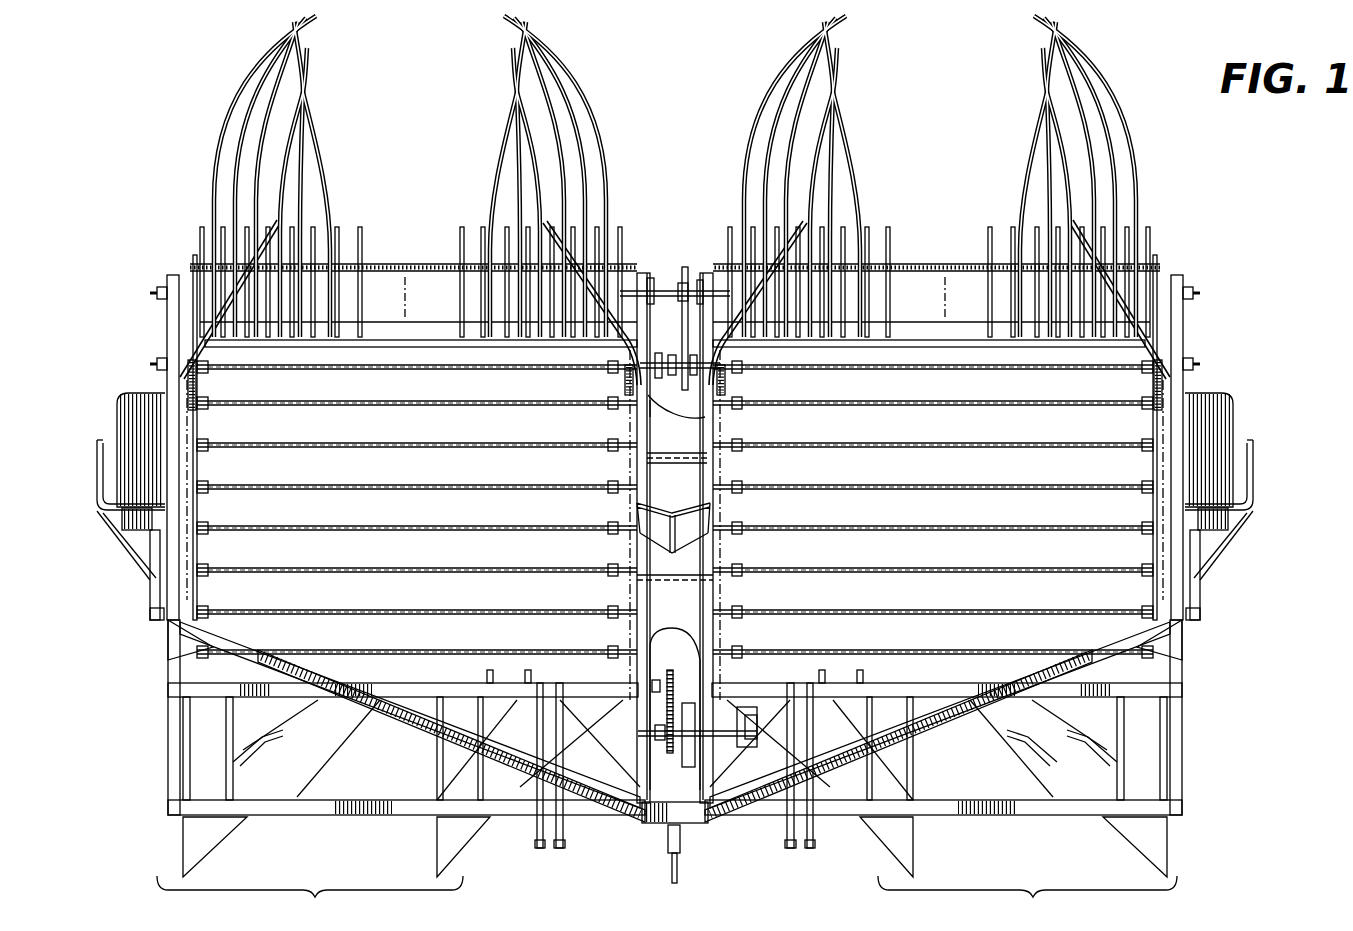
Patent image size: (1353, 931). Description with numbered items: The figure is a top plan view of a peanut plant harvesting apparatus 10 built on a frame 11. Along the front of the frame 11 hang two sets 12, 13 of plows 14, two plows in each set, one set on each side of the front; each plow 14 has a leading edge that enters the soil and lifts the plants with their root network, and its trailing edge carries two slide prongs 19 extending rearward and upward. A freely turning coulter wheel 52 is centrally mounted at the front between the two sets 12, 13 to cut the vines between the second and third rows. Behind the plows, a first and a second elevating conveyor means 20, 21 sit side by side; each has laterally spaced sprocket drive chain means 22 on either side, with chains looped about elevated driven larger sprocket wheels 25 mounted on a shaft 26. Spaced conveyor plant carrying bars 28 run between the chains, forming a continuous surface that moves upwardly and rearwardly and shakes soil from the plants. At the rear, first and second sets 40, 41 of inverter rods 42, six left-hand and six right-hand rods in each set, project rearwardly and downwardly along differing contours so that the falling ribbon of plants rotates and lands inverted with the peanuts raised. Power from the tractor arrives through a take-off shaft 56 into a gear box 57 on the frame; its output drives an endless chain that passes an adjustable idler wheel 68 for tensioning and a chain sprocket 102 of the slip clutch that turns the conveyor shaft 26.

The peanut plant harvesting apparatus 10 is at (695, 466).
The frame 11 is at (1183, 710).
The first set of plows 12 is at (310, 896).
The second set of plows 13 is at (1027, 896).
The plow 14 is at (210, 843).
The slide prong 19 is at (246, 748).
The first elevating conveyor means 20 is at (190, 590).
The second elevating conveyor means 21 is at (1152, 429).
The sprocket drive chain means 22 is at (192, 470).
The larger sprocket wheel 25 is at (202, 373).
The shaft 26 is at (652, 402).
The conveyor plant carrying bar 28 is at (510, 444).
The first set of inverter rods 40 is at (338, 88).
The second set of inverter rods 41 is at (864, 90).
The inverter rod 42 is at (252, 78).
The coulter wheel 52 is at (672, 868).
The take-off shaft 56 is at (682, 852).
The gear box 57 is at (695, 776).
The adjustable idler wheel 68 is at (674, 668).
The chain sprocket 102 is at (662, 300).